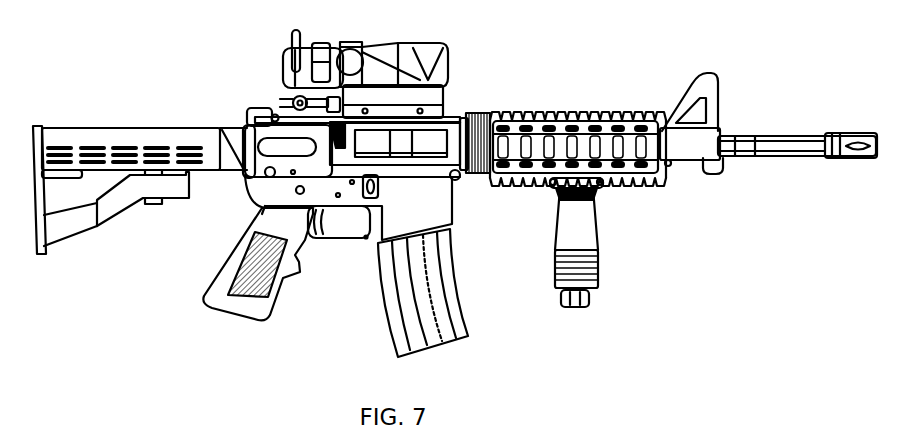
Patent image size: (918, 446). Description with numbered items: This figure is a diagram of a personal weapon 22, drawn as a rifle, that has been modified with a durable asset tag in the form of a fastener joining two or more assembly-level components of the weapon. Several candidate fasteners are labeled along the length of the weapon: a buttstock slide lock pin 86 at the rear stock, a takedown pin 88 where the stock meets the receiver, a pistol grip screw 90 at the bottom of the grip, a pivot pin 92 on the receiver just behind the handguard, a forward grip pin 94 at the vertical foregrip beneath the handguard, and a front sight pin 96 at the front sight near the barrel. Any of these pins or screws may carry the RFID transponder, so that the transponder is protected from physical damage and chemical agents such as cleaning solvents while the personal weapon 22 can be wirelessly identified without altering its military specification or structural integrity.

The personal weapon 22 is at (497, 104).
The buttstock slide lock pin 86 is at (148, 205).
The takedown pin 88 is at (225, 133).
The pistol grip screw 90 is at (223, 313).
The pivot pin 92 is at (457, 178).
The forward grip pin 94 is at (587, 186).
The front sight pin 96 is at (670, 167).